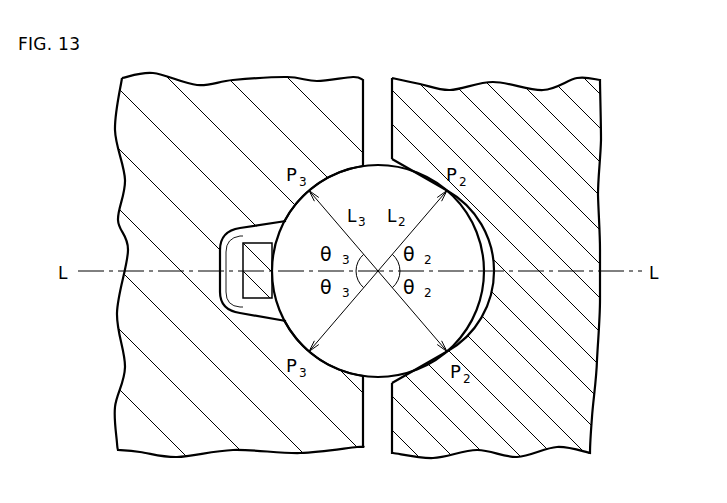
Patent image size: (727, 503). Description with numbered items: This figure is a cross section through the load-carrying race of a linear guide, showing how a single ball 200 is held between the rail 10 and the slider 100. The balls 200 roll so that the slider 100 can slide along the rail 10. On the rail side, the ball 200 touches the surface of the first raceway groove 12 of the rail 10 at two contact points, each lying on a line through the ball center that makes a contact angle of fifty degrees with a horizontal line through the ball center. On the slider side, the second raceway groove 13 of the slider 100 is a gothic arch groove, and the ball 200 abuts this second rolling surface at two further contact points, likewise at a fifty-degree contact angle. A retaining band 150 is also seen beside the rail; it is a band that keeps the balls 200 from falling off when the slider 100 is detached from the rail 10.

The rail 10 is at (314, 129).
The first raceway groove 12 is at (302, 208).
The second raceway groove 13 is at (492, 290).
The slider 100 is at (489, 136).
The retaining band 150 is at (255, 285).
The ball 200 is at (388, 353).